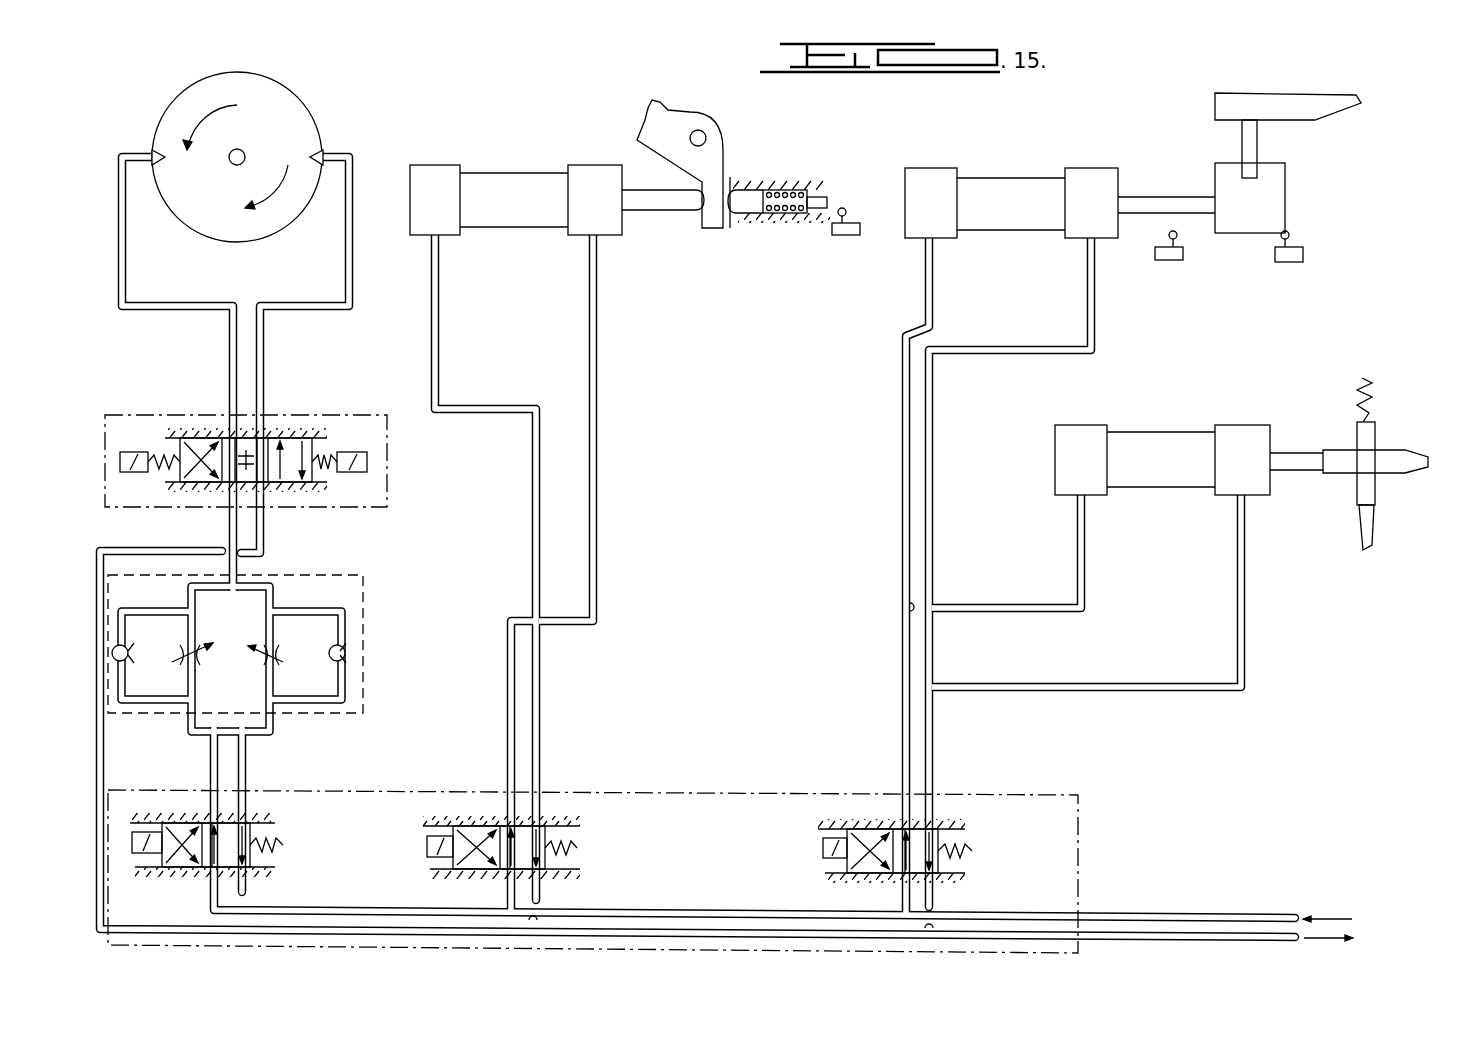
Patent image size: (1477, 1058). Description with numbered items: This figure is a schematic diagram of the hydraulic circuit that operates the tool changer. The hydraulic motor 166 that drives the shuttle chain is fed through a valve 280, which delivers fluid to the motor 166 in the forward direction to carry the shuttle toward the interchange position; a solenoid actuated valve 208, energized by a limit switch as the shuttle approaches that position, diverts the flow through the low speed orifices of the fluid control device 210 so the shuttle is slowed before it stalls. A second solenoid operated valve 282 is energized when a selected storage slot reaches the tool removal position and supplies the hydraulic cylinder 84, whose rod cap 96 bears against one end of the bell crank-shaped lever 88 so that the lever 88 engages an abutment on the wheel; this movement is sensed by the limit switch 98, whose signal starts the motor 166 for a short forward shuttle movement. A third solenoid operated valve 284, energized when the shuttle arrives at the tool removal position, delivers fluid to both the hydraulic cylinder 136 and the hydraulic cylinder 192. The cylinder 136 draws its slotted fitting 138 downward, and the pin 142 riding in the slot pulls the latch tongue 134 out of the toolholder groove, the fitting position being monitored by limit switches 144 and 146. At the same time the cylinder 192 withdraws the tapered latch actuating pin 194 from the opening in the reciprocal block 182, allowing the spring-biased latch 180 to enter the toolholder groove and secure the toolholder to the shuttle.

The hydraulic motor 166 is at (308, 108).
The valve 280 is at (292, 442).
The fluid control device 210 is at (287, 572).
The solenoid actuated valve 208 is at (168, 822).
The solenoid operated valve 282 is at (488, 826).
The solenoid operated valve 284 is at (872, 829).
The hydraulic cylinder 84 is at (503, 180).
The lever 88 is at (715, 140).
The rod cap 96 is at (746, 210).
The limit switch 98 is at (850, 238).
The hydraulic cylinder 136 is at (1003, 180).
The slotted fitting 138 is at (1275, 193).
The pin 142 is at (1253, 145).
The latch tongue 134 is at (1307, 95).
The limit switch 144 is at (1290, 255).
The limit switch 146 is at (1163, 258).
The hydraulic cylinder 192 is at (1157, 447).
The latch actuating pin 194 is at (1388, 458).
The reciprocal block 182 is at (1373, 493).
The latch 180 is at (1368, 542).